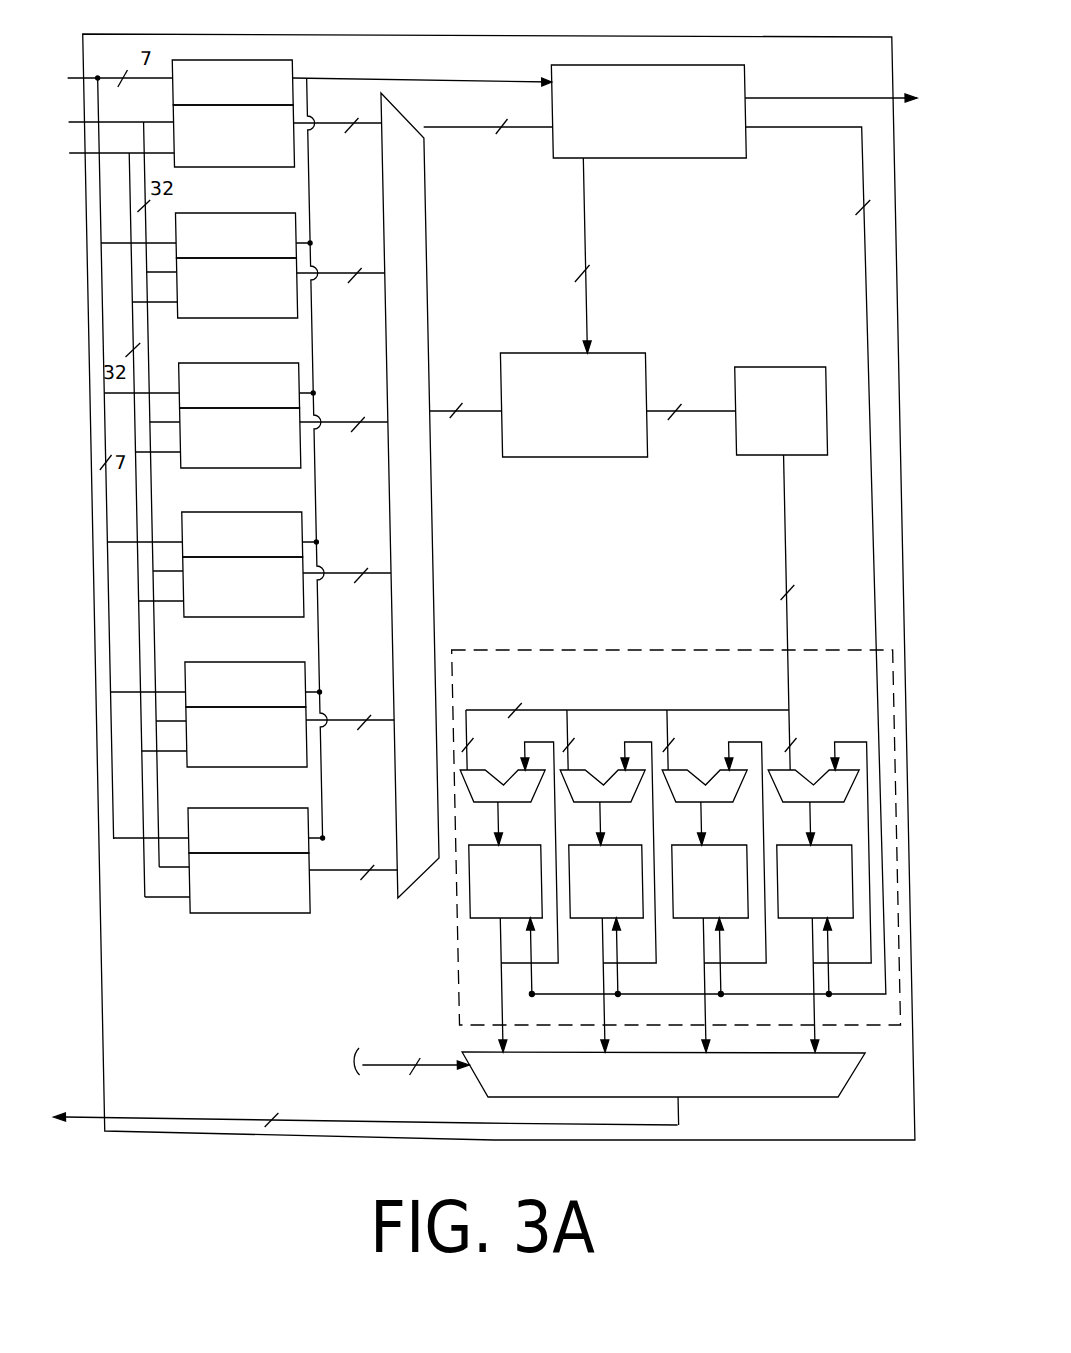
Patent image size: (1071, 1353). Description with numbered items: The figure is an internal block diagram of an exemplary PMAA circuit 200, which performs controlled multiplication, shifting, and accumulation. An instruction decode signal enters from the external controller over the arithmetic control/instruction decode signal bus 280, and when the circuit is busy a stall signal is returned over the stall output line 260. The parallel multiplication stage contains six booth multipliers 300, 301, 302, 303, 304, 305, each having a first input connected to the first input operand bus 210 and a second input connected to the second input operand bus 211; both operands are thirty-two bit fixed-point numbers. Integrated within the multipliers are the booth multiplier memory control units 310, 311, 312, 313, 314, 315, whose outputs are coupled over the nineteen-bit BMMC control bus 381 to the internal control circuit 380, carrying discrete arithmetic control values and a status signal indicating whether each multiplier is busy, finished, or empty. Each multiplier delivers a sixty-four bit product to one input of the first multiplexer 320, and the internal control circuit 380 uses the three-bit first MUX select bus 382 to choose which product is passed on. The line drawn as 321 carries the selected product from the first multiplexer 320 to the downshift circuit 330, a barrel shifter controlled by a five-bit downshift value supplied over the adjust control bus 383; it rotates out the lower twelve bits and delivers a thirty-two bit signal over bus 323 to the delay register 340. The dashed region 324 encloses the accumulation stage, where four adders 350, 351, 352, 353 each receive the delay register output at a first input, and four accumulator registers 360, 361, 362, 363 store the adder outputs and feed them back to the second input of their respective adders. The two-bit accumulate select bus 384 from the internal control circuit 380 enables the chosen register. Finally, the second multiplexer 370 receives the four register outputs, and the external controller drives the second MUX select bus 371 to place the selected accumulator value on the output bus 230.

The PMAA circuit 200 is at (750, 22).
The arithmetic control/instruction decode signal bus 280 is at (73, 77).
The first input operand bus 210 is at (72, 120).
The second input operand bus 211 is at (77, 160).
The booth multiplier memory control unit 310 is at (232, 82).
The booth multiplier memory control unit 311 is at (235, 235).
The booth multiplier memory control unit 312 is at (239, 385).
The booth multiplier memory control unit 313 is at (242, 534).
The booth multiplier memory control unit 314 is at (245, 684).
The booth multiplier memory control unit 315 is at (248, 830).
The booth multiplier 300 is at (233, 136).
The booth multiplier 301 is at (236, 288).
The booth multiplier 302 is at (240, 438).
The booth multiplier 303 is at (243, 587).
The booth multiplier 304 is at (246, 737).
The booth multiplier 305 is at (249, 883).
The first multiplexer 320 is at (366, 493).
The 64-bit line 321 is at (431, 413).
The bus 323 is at (706, 415).
The accumulation unit 324 is at (625, 648).
The downshift circuit 330 is at (573, 405).
The delay register 340 is at (789, 568).
The adder 350 is at (490, 805).
The adder 351 is at (592, 805).
The adder 352 is at (693, 805).
The adder 353 is at (801, 805).
The accumulator register 360 is at (507, 948).
The accumulator register 361 is at (607, 948).
The accumulator register 362 is at (711, 948).
The accumulator register 363 is at (816, 948).
The second multiplexer 370 is at (664, 1088).
The second MUX select bus 371 is at (430, 1060).
The internal control circuit 380 is at (648, 111).
The BMMC control bus 381 is at (468, 78).
The first MUX select bus 382 is at (452, 128).
The adjust control bus 383 is at (580, 228).
The accumulate select bus 384 is at (827, 135).
The stall output line 260 is at (828, 95).
The output bus 230 is at (72, 1120).